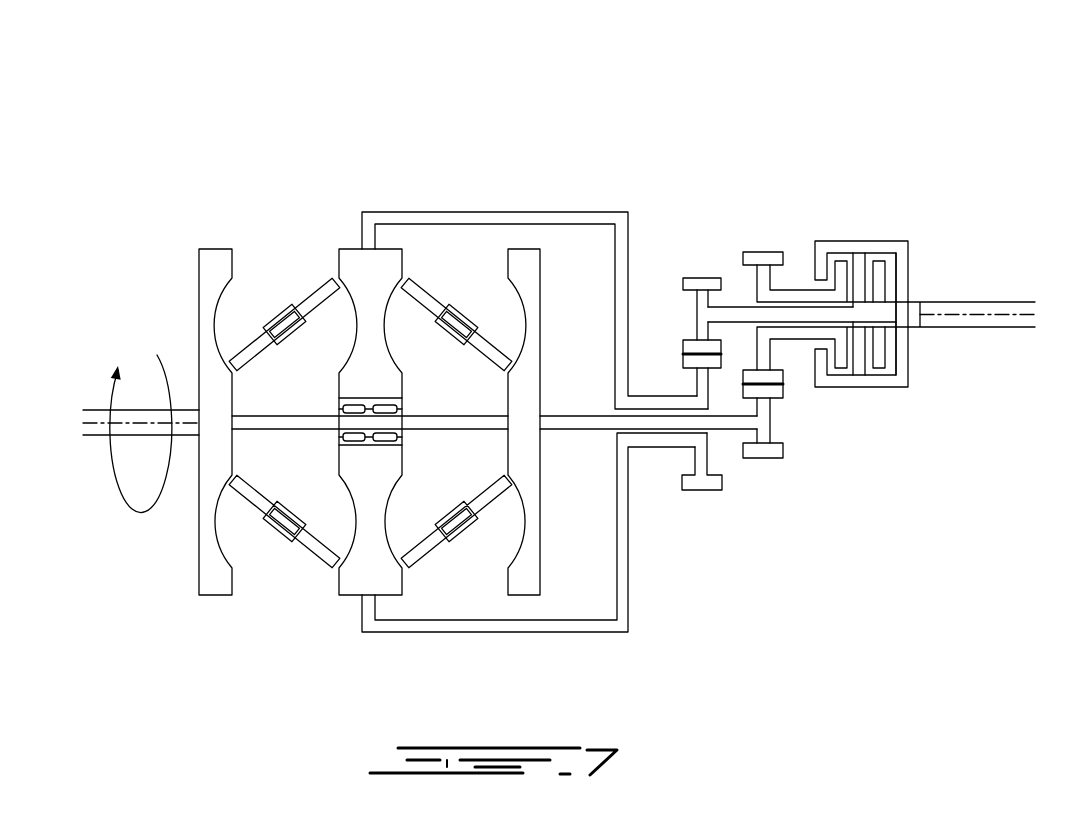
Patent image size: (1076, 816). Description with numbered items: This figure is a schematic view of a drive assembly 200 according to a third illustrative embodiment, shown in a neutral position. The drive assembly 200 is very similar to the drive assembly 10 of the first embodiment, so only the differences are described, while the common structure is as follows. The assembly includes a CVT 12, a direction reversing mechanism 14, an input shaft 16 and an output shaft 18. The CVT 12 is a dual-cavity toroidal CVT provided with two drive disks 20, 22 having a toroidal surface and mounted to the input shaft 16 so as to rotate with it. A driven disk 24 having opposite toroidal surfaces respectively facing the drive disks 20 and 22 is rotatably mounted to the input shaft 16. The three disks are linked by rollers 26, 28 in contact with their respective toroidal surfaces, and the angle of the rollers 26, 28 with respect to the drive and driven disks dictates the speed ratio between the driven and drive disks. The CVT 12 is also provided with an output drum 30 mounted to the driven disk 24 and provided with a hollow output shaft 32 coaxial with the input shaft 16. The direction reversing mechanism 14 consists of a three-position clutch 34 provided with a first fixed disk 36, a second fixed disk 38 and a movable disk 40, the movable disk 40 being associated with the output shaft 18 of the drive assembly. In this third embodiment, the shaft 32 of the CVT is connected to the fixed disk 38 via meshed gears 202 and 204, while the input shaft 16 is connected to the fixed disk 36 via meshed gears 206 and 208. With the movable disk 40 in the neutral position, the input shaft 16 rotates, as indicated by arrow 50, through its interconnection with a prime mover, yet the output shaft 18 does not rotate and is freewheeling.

The drive assembly 200 is at (690, 122).
The drive assembly 10 is at (196, 188).
The CVT 12 is at (372, 190).
The direction reversing mechanism 14 is at (857, 223).
The input shaft 16 is at (93, 437).
The output shaft 18 is at (1012, 327).
The drive disk 20 is at (208, 582).
The drive disk 22 is at (530, 580).
The driven disk 24 is at (353, 580).
The roller 26 is at (317, 560).
The roller 28 is at (423, 557).
The output drum 30 is at (479, 222).
The hollow output shaft 32 is at (660, 438).
The three-position clutch 34 is at (910, 247).
The first fixed disk 36 is at (841, 363).
The second fixed disk 38 is at (878, 363).
The movable disk 40 is at (903, 277).
The arrow 50 is at (138, 513).
The meshed gear 202 is at (698, 490).
The meshed gear 204 is at (689, 278).
The meshed gear 206 is at (762, 455).
The meshed gear 208 is at (757, 252).